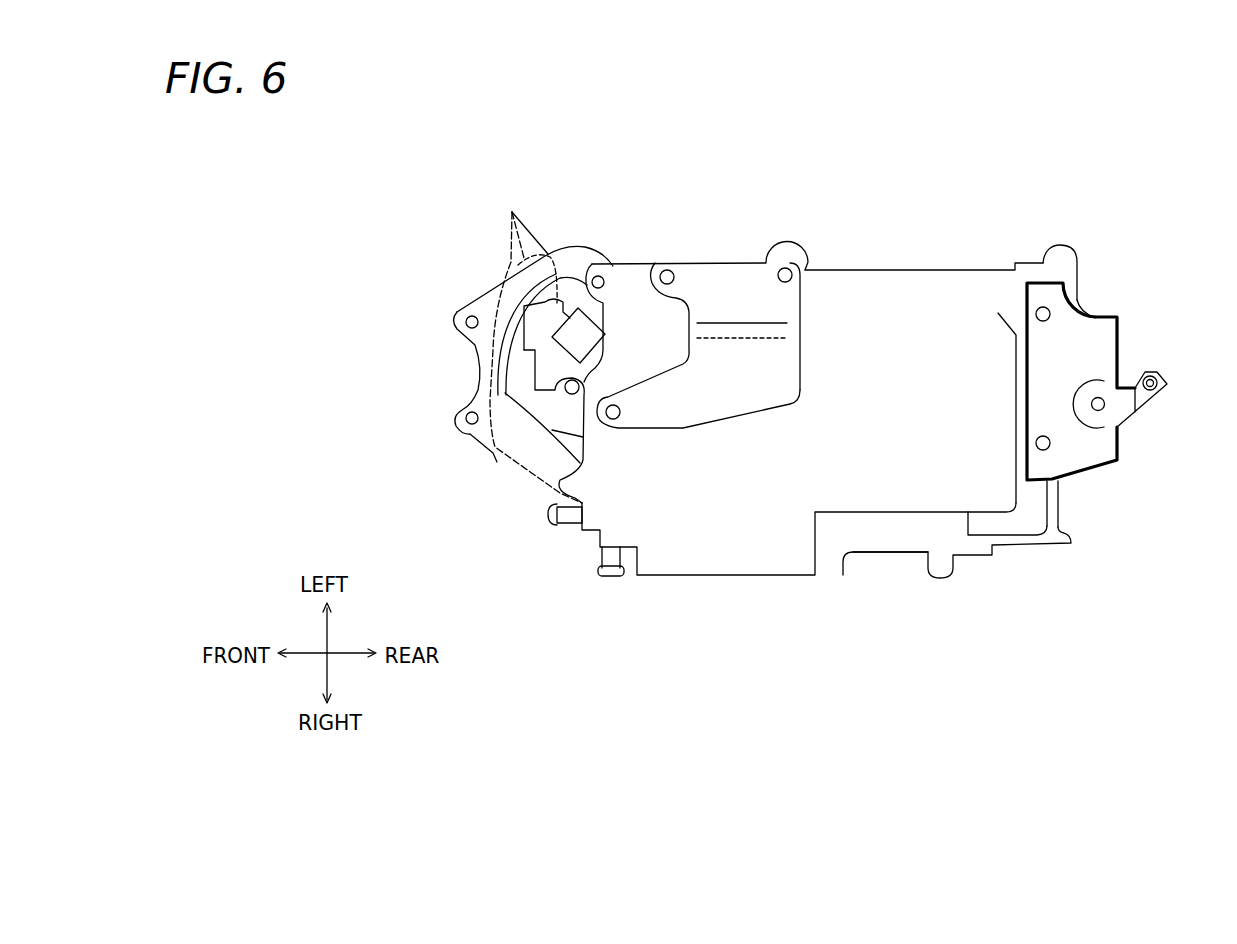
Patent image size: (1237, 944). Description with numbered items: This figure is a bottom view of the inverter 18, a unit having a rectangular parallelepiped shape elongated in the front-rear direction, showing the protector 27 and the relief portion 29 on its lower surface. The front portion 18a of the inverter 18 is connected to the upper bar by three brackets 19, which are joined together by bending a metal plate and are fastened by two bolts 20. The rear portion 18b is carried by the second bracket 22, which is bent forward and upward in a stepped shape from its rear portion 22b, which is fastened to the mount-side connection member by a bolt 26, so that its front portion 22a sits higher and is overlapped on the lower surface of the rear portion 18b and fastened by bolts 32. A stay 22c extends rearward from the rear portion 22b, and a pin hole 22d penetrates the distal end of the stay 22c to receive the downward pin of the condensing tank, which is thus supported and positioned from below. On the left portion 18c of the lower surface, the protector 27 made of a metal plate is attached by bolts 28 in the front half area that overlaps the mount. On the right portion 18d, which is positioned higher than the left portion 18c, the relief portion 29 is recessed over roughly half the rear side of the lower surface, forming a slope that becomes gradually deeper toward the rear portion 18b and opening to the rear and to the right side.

The inverter 18 is at (760, 578).
The front portion 18a is at (577, 422).
The rear portion 18b is at (1065, 495).
The left portion 18c is at (870, 270).
The right portion 18d is at (668, 578).
The brackets 19 is at (535, 342).
The bolts 20 is at (460, 413).
The second bracket 22 is at (1125, 335).
The front portion 22a is at (1040, 290).
The rear portion 22b is at (1092, 330).
The stay 22c is at (1152, 398).
The pin hole 22d is at (1158, 380).
The bolt 26 is at (1103, 408).
The protector 27 is at (720, 268).
The bolts 28 is at (661, 262).
The relief portion 29 is at (885, 528).
The bolts 32 is at (1030, 432).